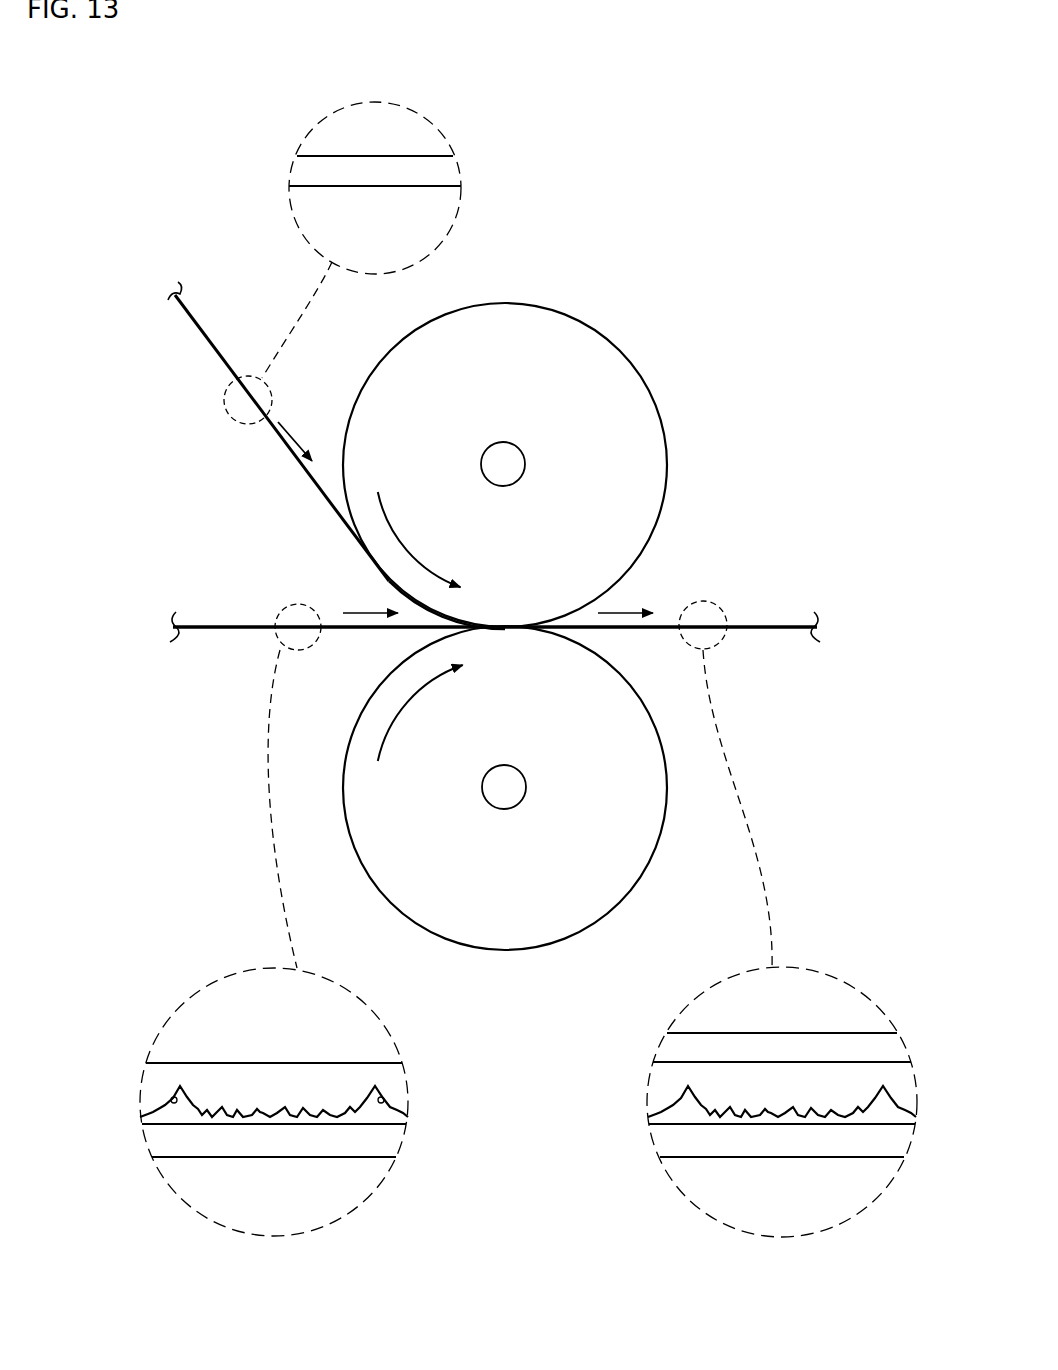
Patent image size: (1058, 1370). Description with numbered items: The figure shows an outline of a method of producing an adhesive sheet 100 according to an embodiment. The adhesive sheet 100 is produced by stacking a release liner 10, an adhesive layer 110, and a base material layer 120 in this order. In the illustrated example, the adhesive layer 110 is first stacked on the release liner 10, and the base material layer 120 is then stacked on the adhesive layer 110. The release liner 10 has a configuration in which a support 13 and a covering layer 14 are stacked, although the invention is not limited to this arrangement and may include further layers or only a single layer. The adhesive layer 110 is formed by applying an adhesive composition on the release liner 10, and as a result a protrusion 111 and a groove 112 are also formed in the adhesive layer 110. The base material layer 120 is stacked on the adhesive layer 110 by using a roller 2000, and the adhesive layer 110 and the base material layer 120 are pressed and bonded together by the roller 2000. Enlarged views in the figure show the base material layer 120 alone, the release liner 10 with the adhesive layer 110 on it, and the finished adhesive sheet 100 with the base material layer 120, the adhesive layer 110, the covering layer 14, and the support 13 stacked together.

The release liner 10 is at (478, 900).
The support 13 is at (158, 1142).
The covering layer 14 is at (153, 1123).
The adhesive sheet 100 is at (761, 622).
The adhesive layer 110 is at (240, 627).
The protrusion 111 is at (232, 1117).
The groove 112 is at (171, 1100).
The base material layer 120 is at (440, 172).
The roller 2000 is at (647, 360).